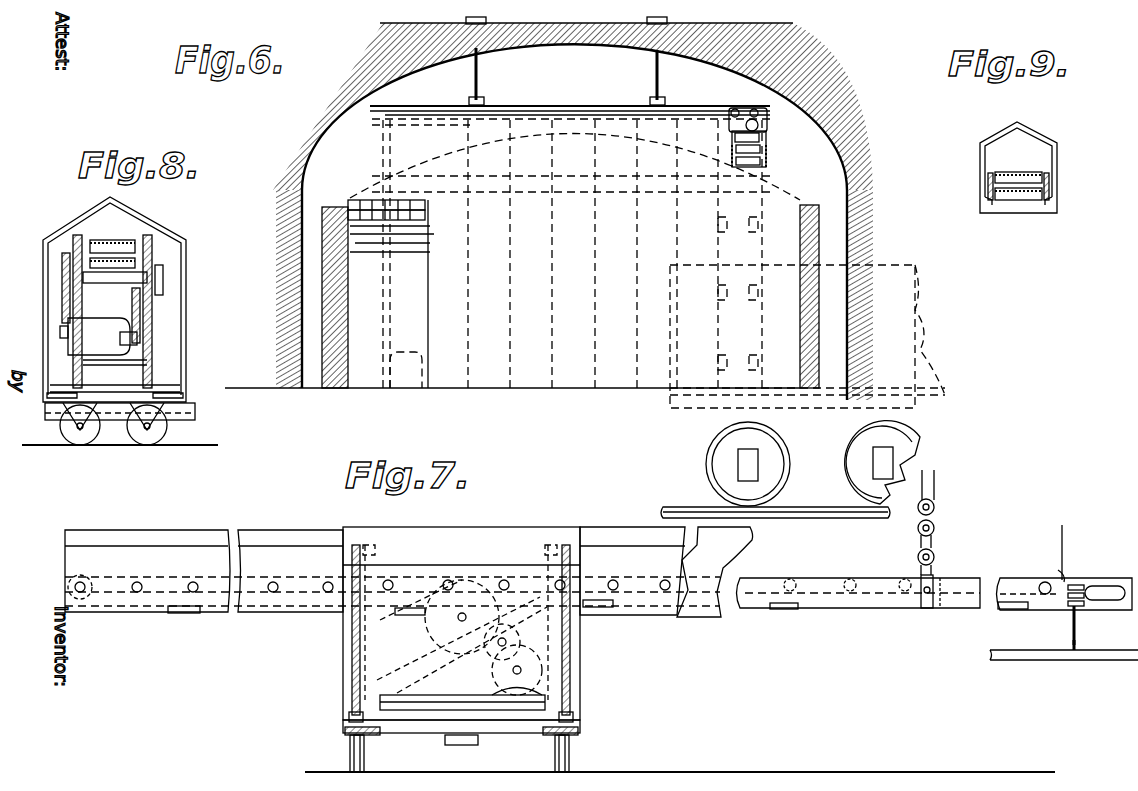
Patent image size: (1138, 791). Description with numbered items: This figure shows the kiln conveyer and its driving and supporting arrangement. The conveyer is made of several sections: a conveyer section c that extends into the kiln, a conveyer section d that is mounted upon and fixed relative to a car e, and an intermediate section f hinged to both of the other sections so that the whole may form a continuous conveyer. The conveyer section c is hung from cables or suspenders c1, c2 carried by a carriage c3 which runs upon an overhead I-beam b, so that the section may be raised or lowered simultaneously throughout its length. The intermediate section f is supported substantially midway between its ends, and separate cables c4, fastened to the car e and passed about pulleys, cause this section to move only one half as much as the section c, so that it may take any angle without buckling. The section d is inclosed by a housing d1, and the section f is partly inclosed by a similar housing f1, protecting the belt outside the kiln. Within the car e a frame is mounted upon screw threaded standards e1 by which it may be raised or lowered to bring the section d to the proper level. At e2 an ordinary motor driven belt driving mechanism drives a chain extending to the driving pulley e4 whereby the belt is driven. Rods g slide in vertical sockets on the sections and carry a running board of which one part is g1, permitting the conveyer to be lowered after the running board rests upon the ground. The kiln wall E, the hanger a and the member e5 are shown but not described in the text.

In FIG. 6, the tunnel E is at (350, 150).
In FIG. 6, the hangers a is at (480, 78).
In FIG. 6, the I-beam b is at (538, 106).
In FIG. 6, the conveyer section c is at (766, 158).
In FIG. 7, the conveyer section c is at (1102, 582).
In FIG. 6, the suspender cable c1 is at (766, 140).
In FIG. 7, the suspender cable c1 is at (1064, 556).
In FIG. 6, the suspender cable c2 is at (733, 138).
In FIG. 6, the carriage c3 is at (757, 106).
In FIG. 7, the separate cables c4 is at (622, 578).
In FIG. 8, the conveyer section d is at (118, 240).
In FIG. 7, the conveyer section d is at (263, 590).
In FIG. 8, the housing d1 is at (84, 215).
In FIG. 7, the housing d1 is at (279, 530).
In FIG. 8, the car e is at (188, 317).
In FIG. 8, the screw threaded standards e1 is at (150, 240).
In FIG. 7, the screw threaded standards e1 is at (350, 646).
In FIG. 7, the motor driven belt driving mechanism e2 is at (350, 668).
In FIG. 7, the driving pulley e4 is at (80, 592).
In FIG. 7, the car platform e5 is at (345, 615).
In FIG. 9, the intermediate section f is at (1028, 173).
In FIG. 7, the intermediate section f is at (880, 606).
In FIG. 9, the housing f1 is at (995, 138).
In FIG. 7, the rods g is at (1070, 614).
In FIG. 7, the running board part g1 is at (1038, 662).